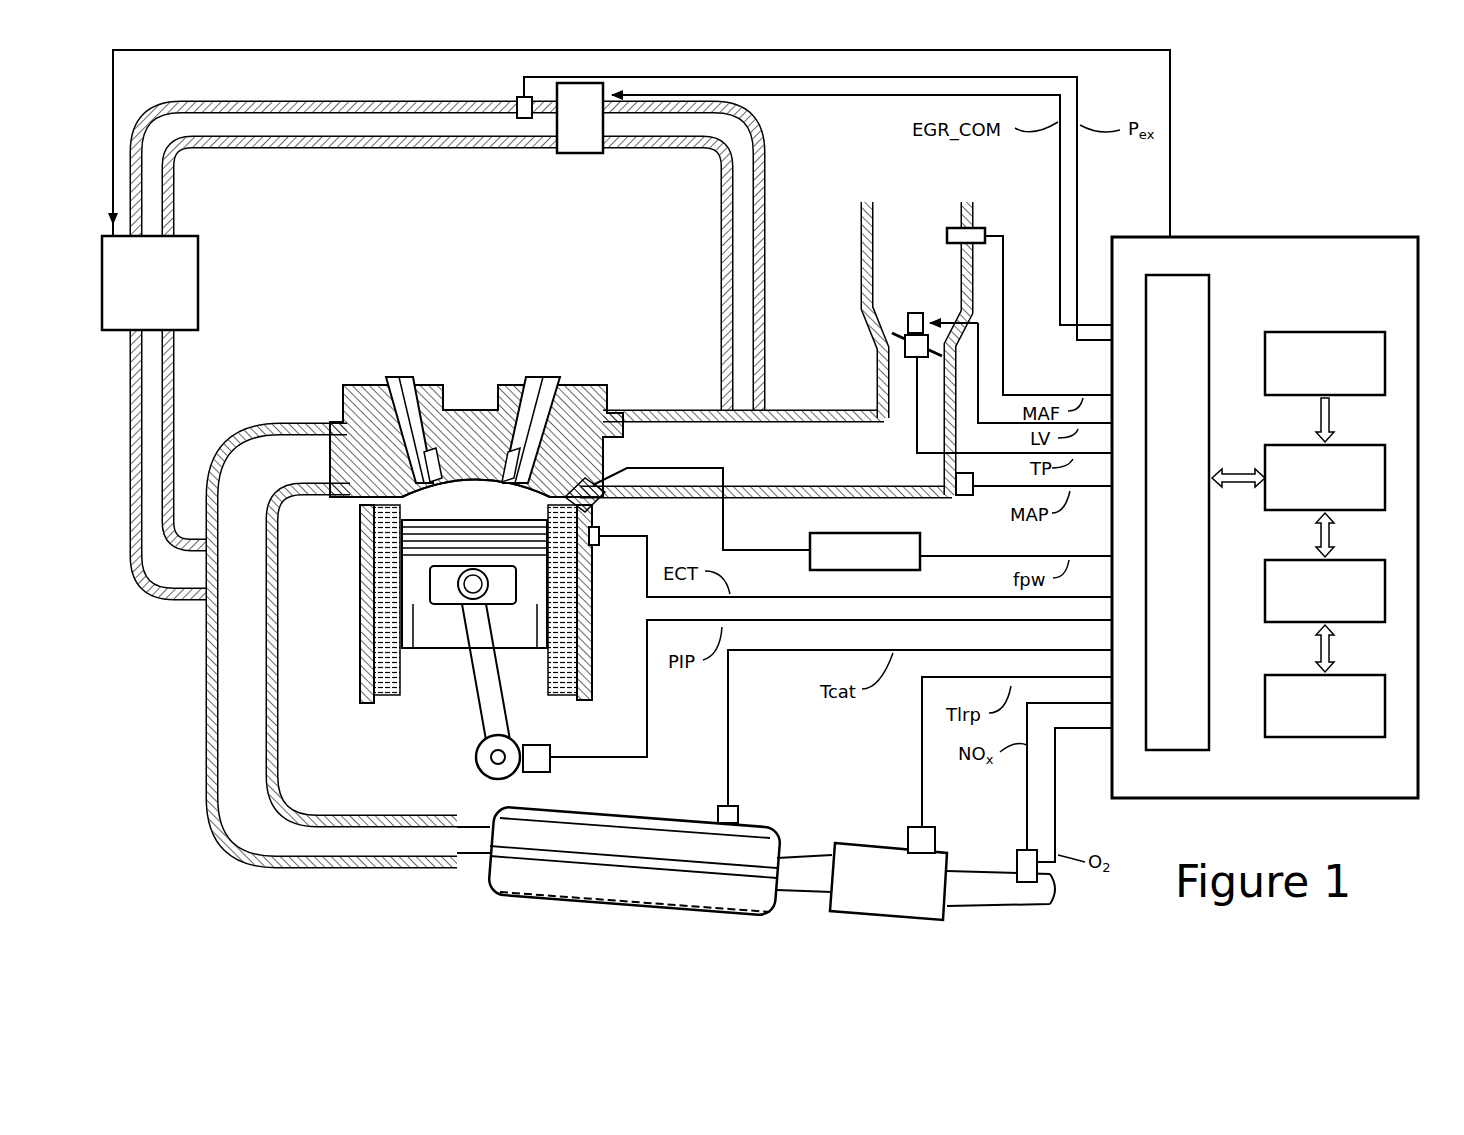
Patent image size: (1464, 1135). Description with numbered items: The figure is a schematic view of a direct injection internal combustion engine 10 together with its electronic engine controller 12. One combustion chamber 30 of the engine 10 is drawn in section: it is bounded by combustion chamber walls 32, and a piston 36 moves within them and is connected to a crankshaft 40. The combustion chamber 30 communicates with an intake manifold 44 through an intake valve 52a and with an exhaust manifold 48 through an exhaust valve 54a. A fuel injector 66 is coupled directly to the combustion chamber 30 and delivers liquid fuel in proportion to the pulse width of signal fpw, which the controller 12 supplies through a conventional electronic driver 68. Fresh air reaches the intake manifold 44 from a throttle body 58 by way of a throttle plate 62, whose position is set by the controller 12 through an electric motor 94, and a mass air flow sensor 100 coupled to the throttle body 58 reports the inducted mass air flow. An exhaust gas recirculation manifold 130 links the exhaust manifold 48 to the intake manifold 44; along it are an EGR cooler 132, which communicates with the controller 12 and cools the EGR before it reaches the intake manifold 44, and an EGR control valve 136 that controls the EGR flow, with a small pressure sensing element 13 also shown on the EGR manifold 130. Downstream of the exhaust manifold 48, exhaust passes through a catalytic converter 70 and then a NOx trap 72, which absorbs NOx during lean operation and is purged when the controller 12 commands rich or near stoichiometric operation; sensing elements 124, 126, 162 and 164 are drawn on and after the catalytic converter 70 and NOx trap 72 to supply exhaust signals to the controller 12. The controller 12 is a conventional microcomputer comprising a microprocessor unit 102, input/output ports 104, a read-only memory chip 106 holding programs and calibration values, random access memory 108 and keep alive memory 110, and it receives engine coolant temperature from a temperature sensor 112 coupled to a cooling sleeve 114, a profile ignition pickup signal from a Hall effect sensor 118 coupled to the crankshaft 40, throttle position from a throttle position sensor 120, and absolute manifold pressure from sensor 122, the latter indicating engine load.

The direct injection internal combustion engine 10 is at (660, 283).
The electronic engine controller 12 is at (1285, 237).
The EGR pressure sensor 13 is at (514, 100).
The combustion chamber 30 is at (430, 558).
The combustion chamber walls 32 is at (398, 702).
The piston 36 is at (400, 653).
The crankshaft 40 is at (477, 763).
The intake manifold 44 is at (800, 475).
The exhaust manifold 48 is at (265, 465).
The intake valve 52a is at (545, 482).
The exhaust valve 54a is at (430, 482).
The throttle body 58 is at (905, 386).
The throttle plate 62 is at (912, 337).
The fuel injector 66 is at (600, 512).
The electronic driver 68 is at (813, 533).
The catalytic converter 70 is at (604, 810).
The NOx trap 72 is at (858, 843).
The electric motor 94 is at (918, 313).
The mass air flow sensor 100 is at (955, 228).
The microprocessor unit 102 is at (1265, 460).
The input/output ports 104 is at (1180, 273).
The read-only memory chip 106 is at (1265, 350).
The random access memory 108 is at (1265, 577).
The keep alive memory 110 is at (1265, 695).
The temperature sensor 112 is at (600, 538).
The cooling sleeve 114 is at (590, 660).
The Hall effect sensor 118 is at (546, 750).
The throttle position sensor 120 is at (895, 341).
The manifold pressure sensor 122 is at (968, 498).
The catalyst temperature sensor 124 is at (741, 810).
The trap temperature sensor 126 is at (908, 832).
The EGR manifold 130 is at (447, 350).
The EGR cooler 132 is at (150, 283).
The EGR control valve 136 is at (580, 118).
The exhaust gas oxygen sensor 162 is at (1060, 822).
The NOx sensor 164 is at (1027, 815).